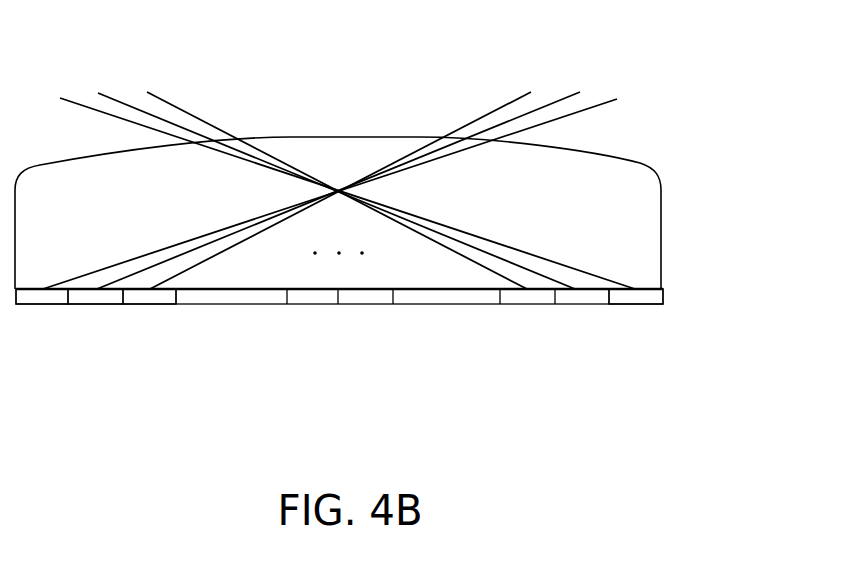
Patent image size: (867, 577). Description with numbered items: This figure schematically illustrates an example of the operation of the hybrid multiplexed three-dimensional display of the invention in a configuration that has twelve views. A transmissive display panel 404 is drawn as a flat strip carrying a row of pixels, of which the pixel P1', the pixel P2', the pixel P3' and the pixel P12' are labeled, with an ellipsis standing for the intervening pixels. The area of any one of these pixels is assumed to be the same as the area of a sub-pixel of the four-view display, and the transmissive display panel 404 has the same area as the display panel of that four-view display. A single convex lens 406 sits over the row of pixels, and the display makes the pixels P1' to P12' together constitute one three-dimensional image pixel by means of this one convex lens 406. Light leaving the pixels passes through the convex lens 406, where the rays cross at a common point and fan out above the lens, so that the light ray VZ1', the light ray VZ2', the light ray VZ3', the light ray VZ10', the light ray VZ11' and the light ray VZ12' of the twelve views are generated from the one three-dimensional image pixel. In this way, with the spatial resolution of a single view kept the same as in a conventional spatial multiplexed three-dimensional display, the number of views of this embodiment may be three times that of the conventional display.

The convex lens 406 is at (340, 137).
The transmissive display panel 404 is at (677, 291).
The pixel P1' is at (42, 345).
The pixel P2' is at (95, 345).
The pixel P3' is at (149, 345).
The pixel P12' is at (636, 345).
The light ray of a view VZ1' is at (339, 167).
The light ray of a view VZ2' is at (338, 151).
The light ray of a view VZ3' is at (340, 170).
The light ray of a view VZ10' is at (337, 170).
The light ray of a view VZ11' is at (336, 150).
The light ray of a view VZ12' is at (338, 166).